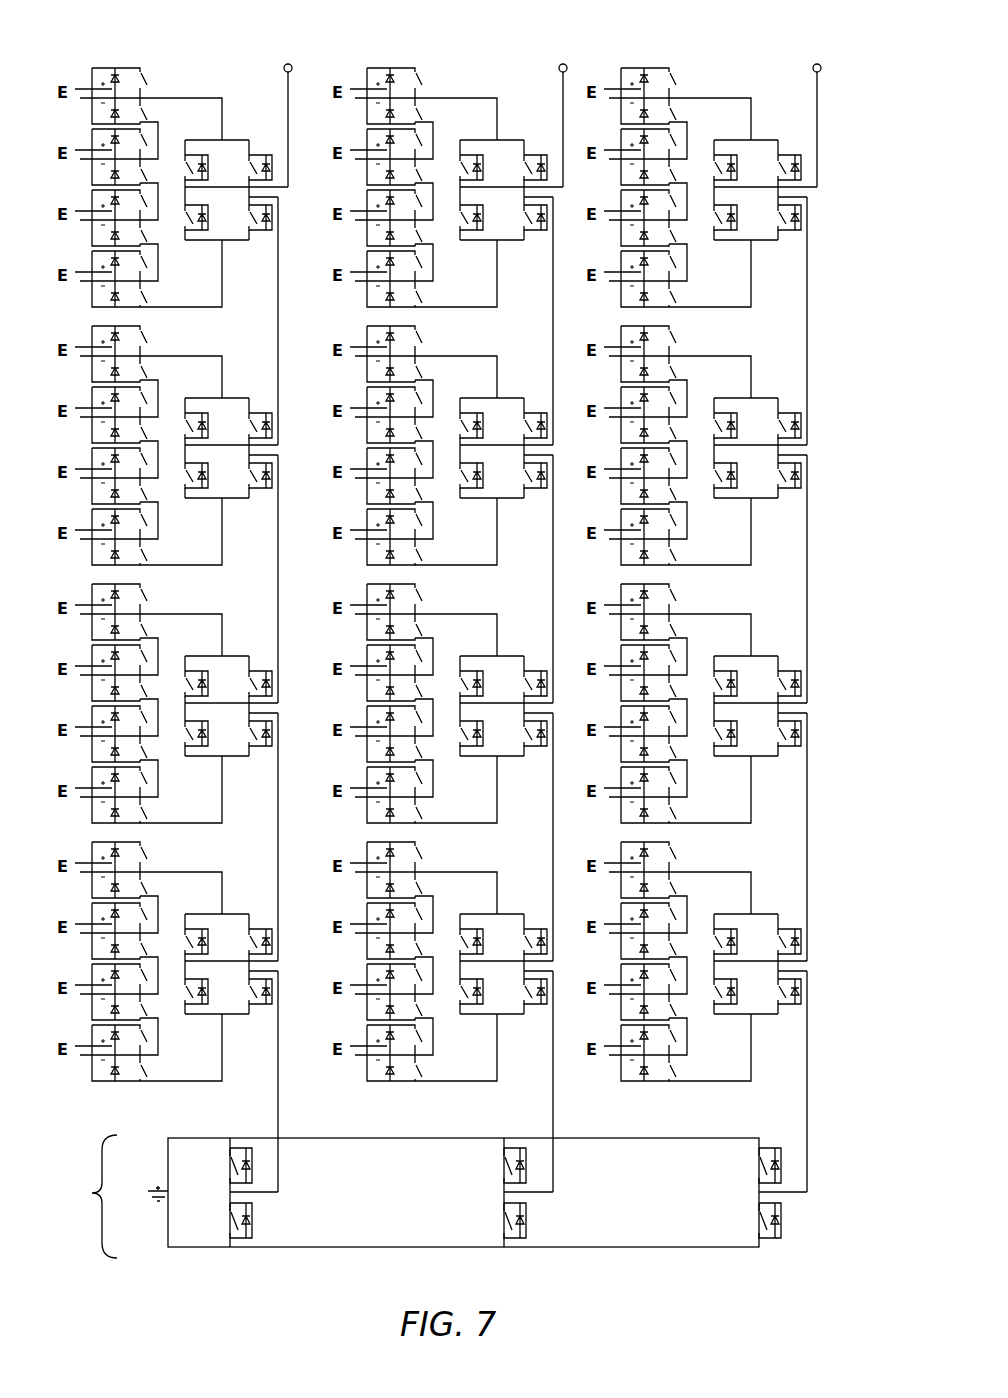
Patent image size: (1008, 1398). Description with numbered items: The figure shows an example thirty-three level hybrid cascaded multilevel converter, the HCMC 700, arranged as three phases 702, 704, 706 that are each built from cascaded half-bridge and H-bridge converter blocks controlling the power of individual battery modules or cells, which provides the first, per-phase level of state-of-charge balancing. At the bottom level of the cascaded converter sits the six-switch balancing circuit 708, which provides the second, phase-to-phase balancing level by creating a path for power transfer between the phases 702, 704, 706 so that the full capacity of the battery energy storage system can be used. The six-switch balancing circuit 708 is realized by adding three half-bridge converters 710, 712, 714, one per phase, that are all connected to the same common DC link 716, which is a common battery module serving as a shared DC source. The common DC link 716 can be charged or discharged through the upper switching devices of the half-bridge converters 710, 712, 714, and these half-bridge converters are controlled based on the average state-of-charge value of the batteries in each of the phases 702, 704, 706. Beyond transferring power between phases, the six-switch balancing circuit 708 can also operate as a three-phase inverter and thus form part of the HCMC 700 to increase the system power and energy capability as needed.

The HCMC 700 is at (839, 216).
The phase 702 is at (179, 63).
The phase 704 is at (455, 63).
The phase 706 is at (712, 63).
The SSBC circuit 708 is at (68, 1158).
The half-bridge converter 710 is at (228, 1262).
The half-bridge converter 712 is at (528, 1263).
The half-bridge converter 714 is at (749, 1263).
The common DC link 716 is at (137, 1213).